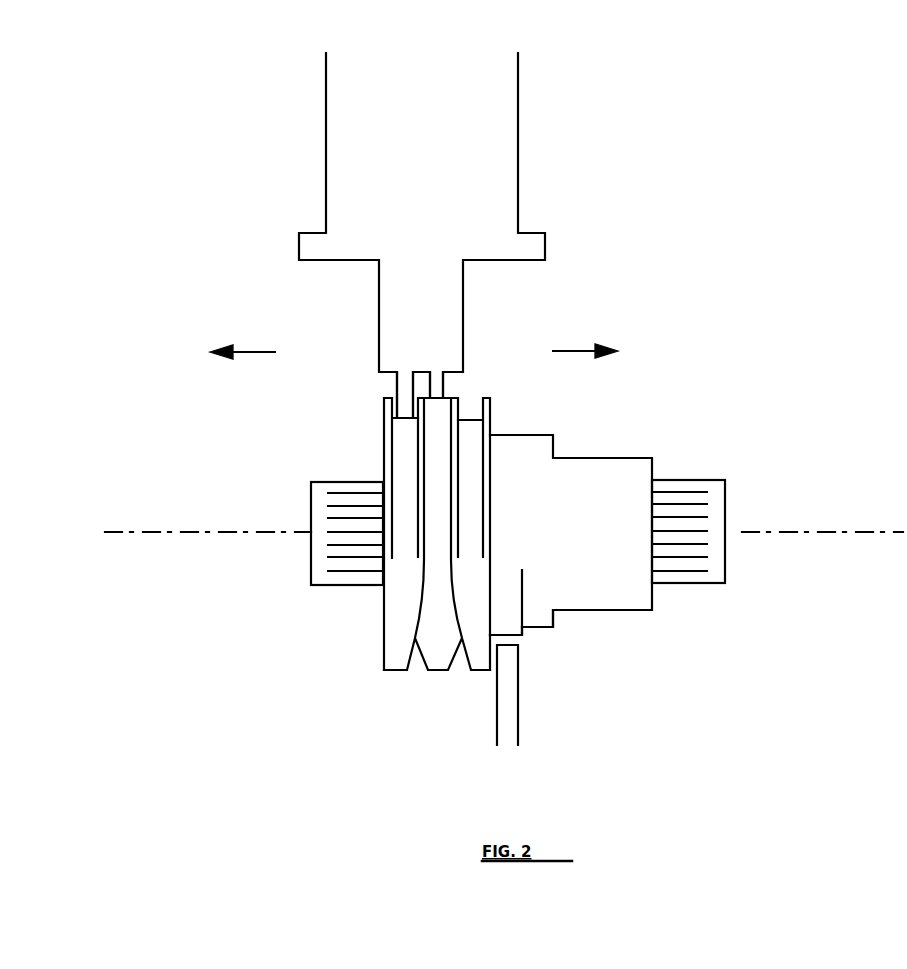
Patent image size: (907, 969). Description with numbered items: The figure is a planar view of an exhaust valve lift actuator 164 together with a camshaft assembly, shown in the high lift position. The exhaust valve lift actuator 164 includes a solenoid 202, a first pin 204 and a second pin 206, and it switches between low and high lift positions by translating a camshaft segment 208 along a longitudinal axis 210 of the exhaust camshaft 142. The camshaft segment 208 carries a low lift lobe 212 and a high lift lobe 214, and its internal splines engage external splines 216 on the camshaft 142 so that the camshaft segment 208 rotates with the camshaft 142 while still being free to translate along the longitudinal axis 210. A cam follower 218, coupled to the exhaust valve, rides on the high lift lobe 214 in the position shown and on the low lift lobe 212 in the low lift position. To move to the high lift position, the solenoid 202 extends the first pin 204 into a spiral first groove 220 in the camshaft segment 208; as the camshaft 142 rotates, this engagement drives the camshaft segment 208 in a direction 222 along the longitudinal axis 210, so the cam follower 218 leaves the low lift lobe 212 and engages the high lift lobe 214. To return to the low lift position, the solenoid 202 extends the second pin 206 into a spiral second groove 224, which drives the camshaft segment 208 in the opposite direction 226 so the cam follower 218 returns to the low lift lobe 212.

The exhaust valve lift actuator 164 is at (226, 136).
The solenoid 202 is at (325, 145).
The first pin 204 is at (398, 390).
The second pin 206 is at (443, 390).
The camshaft segment 208 is at (612, 408).
The longitudinal axis 210 is at (233, 531).
The low lift lobe 212 is at (550, 628).
The high lift lobe 214 is at (520, 636).
The external splines 216 is at (353, 573).
The cam follower 218 is at (493, 712).
The first groove 220 is at (403, 437).
The direction 222 is at (242, 343).
The second groove 224 is at (468, 437).
The direction 226 is at (585, 342).
The exhaust camshaft 142 is at (355, 478).